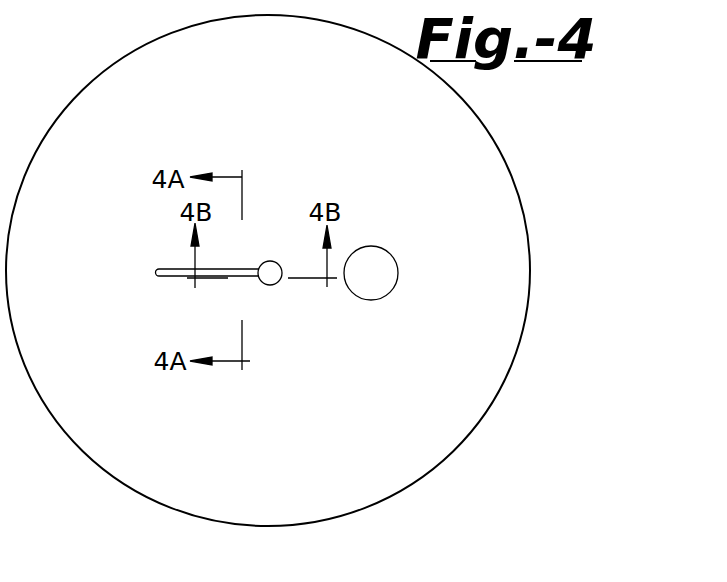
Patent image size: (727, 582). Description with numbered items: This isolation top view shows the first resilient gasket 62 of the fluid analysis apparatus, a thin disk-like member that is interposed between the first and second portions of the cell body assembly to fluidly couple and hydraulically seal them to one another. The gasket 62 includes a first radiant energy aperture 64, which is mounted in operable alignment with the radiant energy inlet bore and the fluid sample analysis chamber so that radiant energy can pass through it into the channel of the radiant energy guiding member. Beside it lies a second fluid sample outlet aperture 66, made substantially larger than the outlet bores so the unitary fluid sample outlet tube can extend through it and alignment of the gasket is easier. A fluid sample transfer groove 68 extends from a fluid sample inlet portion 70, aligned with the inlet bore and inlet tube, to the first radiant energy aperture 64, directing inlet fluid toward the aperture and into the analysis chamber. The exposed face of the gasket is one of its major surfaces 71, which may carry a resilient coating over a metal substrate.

The first resilient gasket 62 is at (522, 342).
The first radiant energy aperture 64 is at (275, 261).
The second fluid sample outlet aperture 66 is at (377, 247).
The fluid sample transfer groove 68 is at (150, 258).
The fluid sample inlet portion 70 is at (155, 270).
The major surface 71 is at (248, 448).